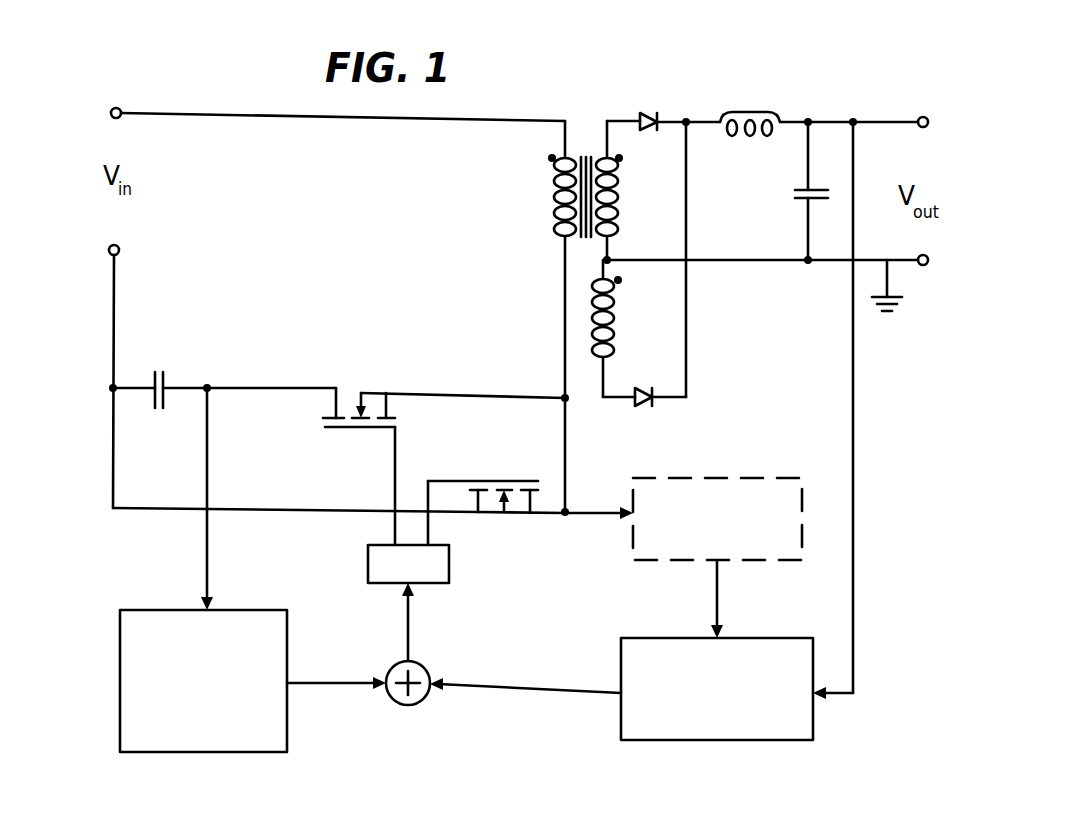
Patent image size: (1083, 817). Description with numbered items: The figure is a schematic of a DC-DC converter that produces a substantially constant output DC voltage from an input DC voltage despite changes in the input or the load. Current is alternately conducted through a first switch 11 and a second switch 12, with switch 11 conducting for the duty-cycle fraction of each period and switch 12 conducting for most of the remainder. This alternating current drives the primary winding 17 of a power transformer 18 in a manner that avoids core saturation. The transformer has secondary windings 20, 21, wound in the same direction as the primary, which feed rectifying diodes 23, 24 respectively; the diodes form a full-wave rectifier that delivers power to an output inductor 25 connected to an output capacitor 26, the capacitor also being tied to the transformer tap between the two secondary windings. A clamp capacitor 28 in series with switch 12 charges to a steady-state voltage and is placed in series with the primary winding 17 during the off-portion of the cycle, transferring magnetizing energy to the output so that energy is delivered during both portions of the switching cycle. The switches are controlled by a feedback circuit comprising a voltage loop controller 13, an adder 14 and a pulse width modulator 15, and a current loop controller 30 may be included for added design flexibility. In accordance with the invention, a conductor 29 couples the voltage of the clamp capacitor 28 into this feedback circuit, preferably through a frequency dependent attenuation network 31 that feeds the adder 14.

The first switch 11 is at (496, 499).
The second switch 12 is at (386, 449).
The voltage loop controller 13 is at (643, 638).
The adder 14 is at (425, 670).
The pulse width modulator 15 is at (368, 566).
The primary winding 17 is at (559, 199).
The power transformer 18 is at (588, 138).
The secondary winding 20 is at (613, 198).
The secondary winding 21 is at (613, 325).
The rectifying diode 23 is at (648, 106).
The rectifying diode 24 is at (659, 383).
The output inductor 25 is at (750, 108).
The output capacitor 26 is at (796, 191).
The clamp capacitor 28 is at (158, 374).
The conductor 29 is at (207, 467).
The current loop controller 30 is at (742, 478).
The frequency dependent attenuation network 31 is at (150, 610).